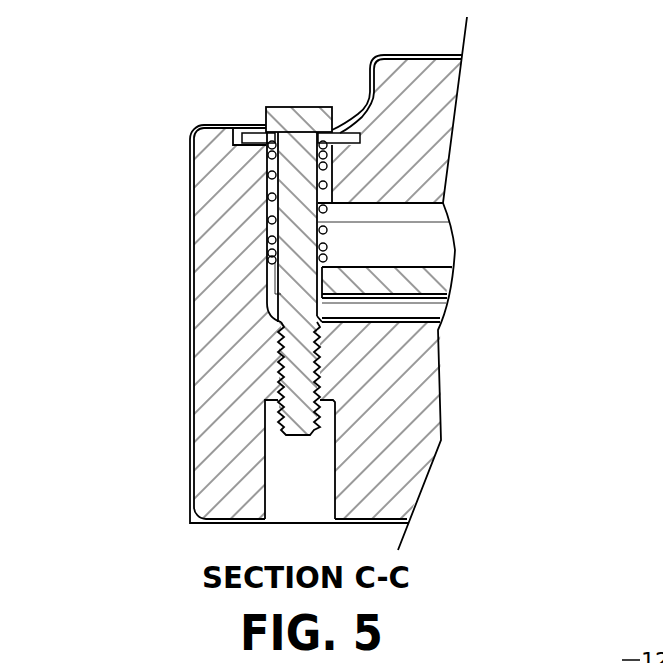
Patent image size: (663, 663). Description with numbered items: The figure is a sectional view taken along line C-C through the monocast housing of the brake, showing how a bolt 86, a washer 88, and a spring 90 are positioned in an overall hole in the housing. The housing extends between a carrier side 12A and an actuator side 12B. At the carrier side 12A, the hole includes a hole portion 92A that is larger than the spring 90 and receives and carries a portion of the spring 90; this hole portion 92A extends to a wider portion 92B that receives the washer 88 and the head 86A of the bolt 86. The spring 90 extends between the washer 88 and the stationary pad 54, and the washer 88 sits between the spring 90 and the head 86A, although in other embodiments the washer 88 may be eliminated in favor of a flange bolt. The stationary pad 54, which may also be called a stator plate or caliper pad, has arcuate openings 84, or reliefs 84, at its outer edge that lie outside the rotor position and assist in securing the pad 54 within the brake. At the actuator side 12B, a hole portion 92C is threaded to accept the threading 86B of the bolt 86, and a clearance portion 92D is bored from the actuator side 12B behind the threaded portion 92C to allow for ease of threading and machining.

The carrier side 12A is at (190, 122).
The actuator side 12B is at (187, 533).
The stationary pad 54 is at (375, 285).
The arcuate openings 84 is at (311, 274).
The bolt 86 is at (277, 98).
The head 86A is at (328, 110).
The threading 86B is at (281, 379).
The washer 88 is at (360, 137).
The spring 90 is at (336, 234).
The hole portion 92A is at (267, 207).
The wider portion 92B is at (262, 130).
The hole portion 92C is at (281, 348).
The clearance portion 92D is at (278, 471).